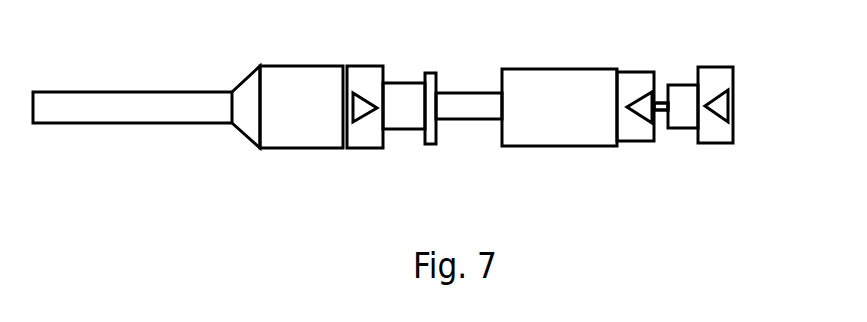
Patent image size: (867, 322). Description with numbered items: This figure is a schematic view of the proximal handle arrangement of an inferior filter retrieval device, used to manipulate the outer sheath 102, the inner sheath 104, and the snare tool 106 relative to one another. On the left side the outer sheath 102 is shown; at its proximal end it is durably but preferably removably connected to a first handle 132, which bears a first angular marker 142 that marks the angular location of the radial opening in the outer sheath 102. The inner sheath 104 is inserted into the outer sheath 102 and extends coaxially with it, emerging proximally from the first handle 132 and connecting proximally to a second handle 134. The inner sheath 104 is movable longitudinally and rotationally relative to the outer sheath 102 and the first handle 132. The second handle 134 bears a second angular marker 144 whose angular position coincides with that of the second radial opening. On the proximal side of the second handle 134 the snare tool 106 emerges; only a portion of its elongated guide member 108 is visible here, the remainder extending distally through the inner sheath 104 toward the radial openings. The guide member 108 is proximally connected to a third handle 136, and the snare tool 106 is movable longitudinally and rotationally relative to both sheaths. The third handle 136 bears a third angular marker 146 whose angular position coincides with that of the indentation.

The outer sheath 102 is at (142, 102).
The inner sheath 104 is at (463, 100).
The snare tool 106 is at (662, 112).
The elongated guide member 108 is at (660, 103).
The first handle 132 is at (290, 128).
The second handle 134 is at (562, 137).
The third handle 136 is at (713, 133).
The first angular marker 142 is at (353, 118).
The second angular marker 144 is at (638, 110).
The third angular marker 146 is at (727, 110).